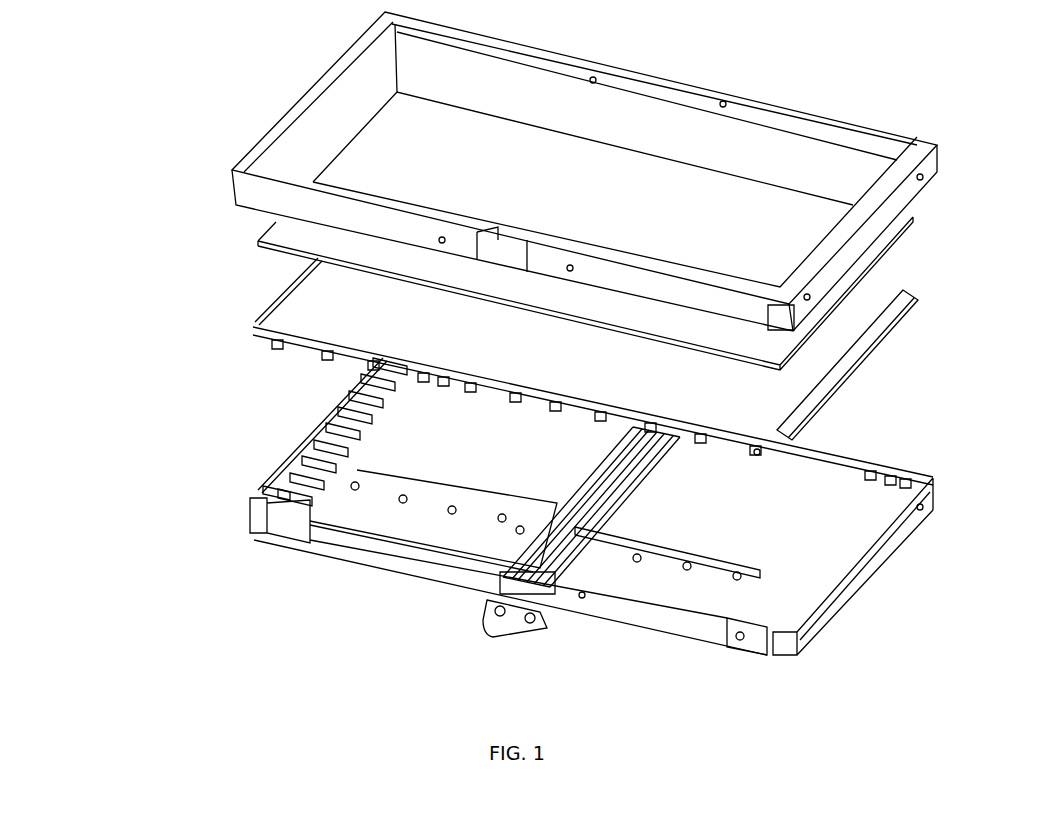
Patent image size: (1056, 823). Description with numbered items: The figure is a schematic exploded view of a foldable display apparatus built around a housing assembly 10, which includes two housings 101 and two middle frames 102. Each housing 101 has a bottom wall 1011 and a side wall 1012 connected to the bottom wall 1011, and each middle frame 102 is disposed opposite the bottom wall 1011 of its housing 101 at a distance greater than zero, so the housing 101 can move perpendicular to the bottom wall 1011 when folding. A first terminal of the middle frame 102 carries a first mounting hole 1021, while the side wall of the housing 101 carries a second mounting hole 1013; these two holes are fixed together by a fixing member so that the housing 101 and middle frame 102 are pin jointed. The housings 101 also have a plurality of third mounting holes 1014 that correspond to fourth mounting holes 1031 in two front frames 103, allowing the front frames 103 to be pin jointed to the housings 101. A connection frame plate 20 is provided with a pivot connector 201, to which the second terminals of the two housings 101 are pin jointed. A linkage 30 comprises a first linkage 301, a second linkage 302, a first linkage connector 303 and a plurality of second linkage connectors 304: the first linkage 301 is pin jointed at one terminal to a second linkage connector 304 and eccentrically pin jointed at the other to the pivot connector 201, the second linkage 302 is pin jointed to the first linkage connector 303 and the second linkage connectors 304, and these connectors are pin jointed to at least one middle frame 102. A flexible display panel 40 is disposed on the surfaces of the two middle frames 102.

The housing assembly 10 is at (110, 92).
The housing 101 is at (287, 383).
The bottom wall 1011 is at (387, 438).
The side wall 1012 is at (857, 573).
The second mounting hole 1013 is at (747, 648).
The third mounting hole 1014 is at (922, 509).
The first mounting hole 1021 is at (757, 457).
The middle frame 102 is at (307, 303).
The front frame 103 is at (280, 124).
The fourth mounting hole 1031 is at (923, 178).
The connection frame plate 20 is at (493, 622).
The pivot connector 201 is at (453, 562).
The linkage 30 is at (149, 491).
The first linkage 301 is at (430, 520).
The second linkage 302 is at (263, 488).
The first linkage connector 303 is at (500, 525).
The second linkage connector 304 is at (253, 535).
The flexible display panel 40 is at (762, 348).